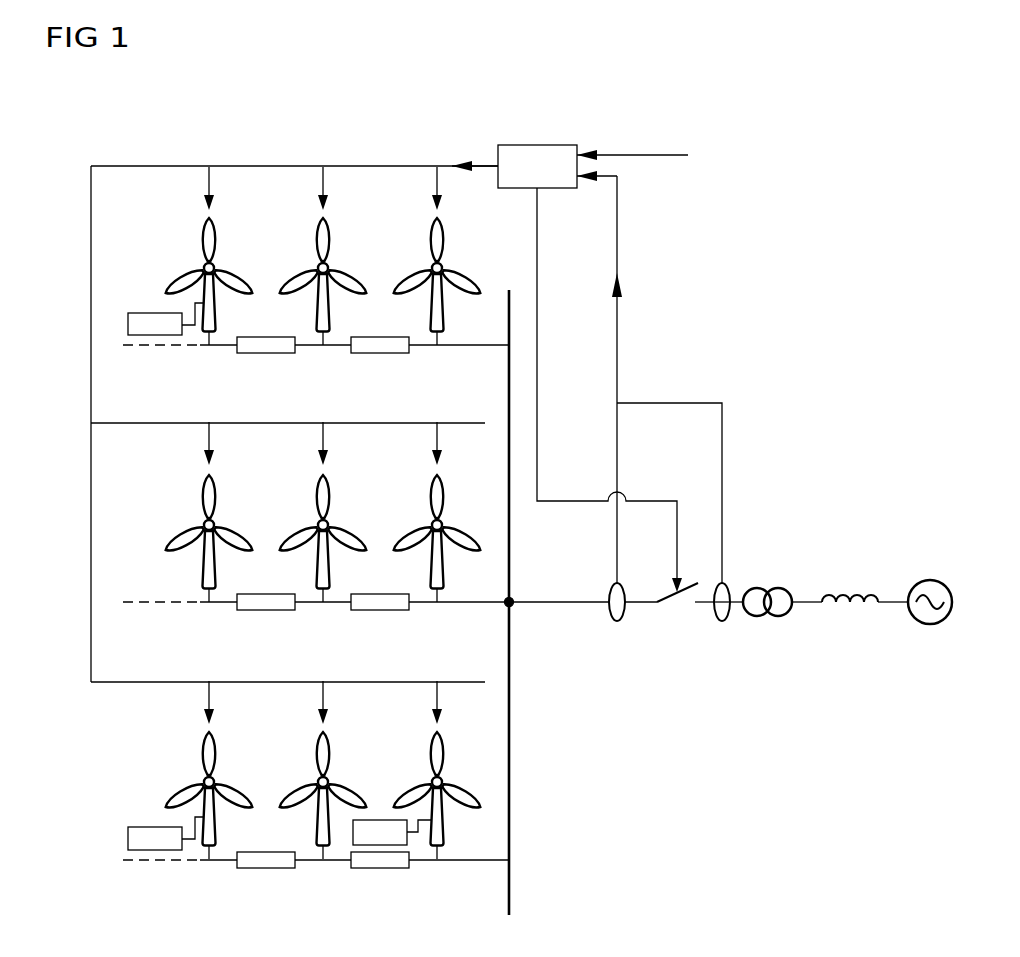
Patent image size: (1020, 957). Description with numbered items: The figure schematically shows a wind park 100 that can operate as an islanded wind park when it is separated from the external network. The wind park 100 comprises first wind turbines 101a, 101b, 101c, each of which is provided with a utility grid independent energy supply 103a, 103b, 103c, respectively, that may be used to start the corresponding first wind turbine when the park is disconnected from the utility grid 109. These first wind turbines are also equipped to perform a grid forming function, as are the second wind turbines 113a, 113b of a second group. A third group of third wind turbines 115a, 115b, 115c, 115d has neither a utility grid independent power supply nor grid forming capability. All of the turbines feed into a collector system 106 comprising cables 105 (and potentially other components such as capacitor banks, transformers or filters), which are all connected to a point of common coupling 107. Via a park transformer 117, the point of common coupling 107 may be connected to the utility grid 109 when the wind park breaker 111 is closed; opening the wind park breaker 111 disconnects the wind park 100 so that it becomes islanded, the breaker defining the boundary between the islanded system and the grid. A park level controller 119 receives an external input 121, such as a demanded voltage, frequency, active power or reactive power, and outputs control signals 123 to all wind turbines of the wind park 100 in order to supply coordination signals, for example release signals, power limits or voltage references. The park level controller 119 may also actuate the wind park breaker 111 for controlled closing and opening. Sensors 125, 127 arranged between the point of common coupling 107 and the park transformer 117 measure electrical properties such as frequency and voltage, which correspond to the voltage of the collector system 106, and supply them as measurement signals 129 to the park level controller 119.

The wind park 100 is at (760, 93).
The first wind turbine 101a is at (185, 250).
The first wind turbine 101b is at (185, 768).
The first wind turbine 101c is at (422, 770).
The utility grid independent energy supply 103a is at (158, 313).
The utility grid independent energy supply 103b is at (158, 827).
The utility grid independent energy supply 103c is at (378, 820).
The cables 105 is at (263, 353).
The collector system 106 is at (130, 358).
The point of common coupling 107 is at (513, 598).
The utility grid 109 is at (930, 580).
The wind park breaker 111 is at (670, 601).
The second wind turbine 113a is at (422, 510).
The second wind turbine 113b is at (308, 768).
The third wind turbine 115a is at (308, 250).
The third wind turbine 115b is at (422, 250).
The third wind turbine 115c is at (182, 512).
The third wind turbine 115d is at (307, 510).
The park transformer 117 is at (778, 588).
The park level controller 119 is at (538, 145).
The external input 121 is at (578, 150).
The control signals 123 is at (452, 165).
The sensor 125 is at (617, 622).
The sensor 127 is at (722, 622).
The measurement signals 129 is at (622, 275).